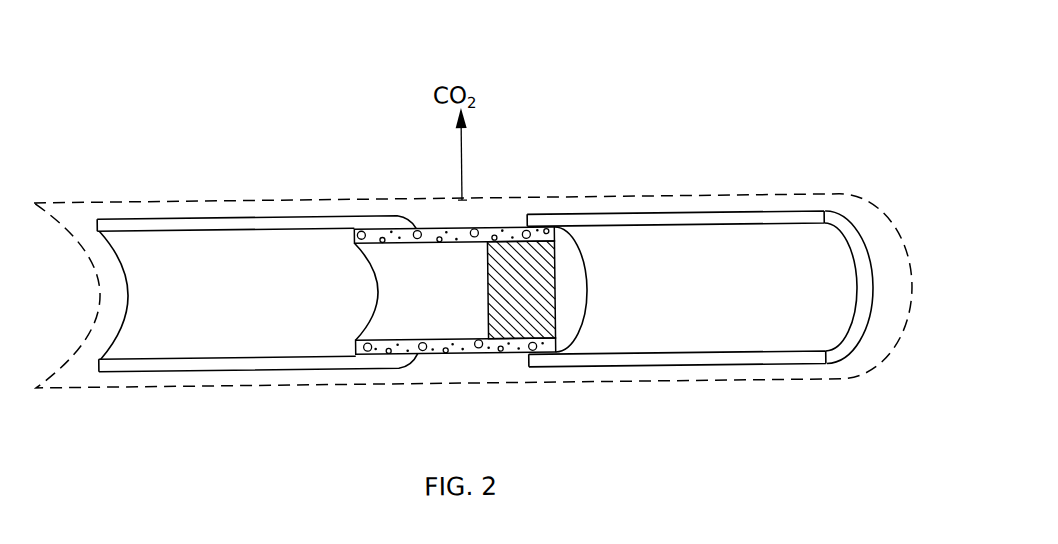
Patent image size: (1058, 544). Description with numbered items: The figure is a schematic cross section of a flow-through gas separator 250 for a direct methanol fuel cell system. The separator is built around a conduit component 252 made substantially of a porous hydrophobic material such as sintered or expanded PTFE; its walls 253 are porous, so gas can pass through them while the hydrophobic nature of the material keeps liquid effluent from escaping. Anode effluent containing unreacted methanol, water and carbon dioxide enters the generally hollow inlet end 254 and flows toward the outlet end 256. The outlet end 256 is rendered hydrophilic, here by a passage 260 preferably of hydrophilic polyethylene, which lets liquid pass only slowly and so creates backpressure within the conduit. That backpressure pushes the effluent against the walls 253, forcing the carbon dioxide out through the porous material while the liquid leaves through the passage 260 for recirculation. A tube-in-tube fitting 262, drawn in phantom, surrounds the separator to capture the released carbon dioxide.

The gas separator 250 is at (744, 67).
The conduit component 252 is at (385, 273).
The walls 253 is at (468, 257).
The inlet end 254 is at (376, 306).
The outlet end 256 is at (583, 299).
The passage 260 is at (522, 331).
The tube-in-tube fitting 262 is at (182, 198).